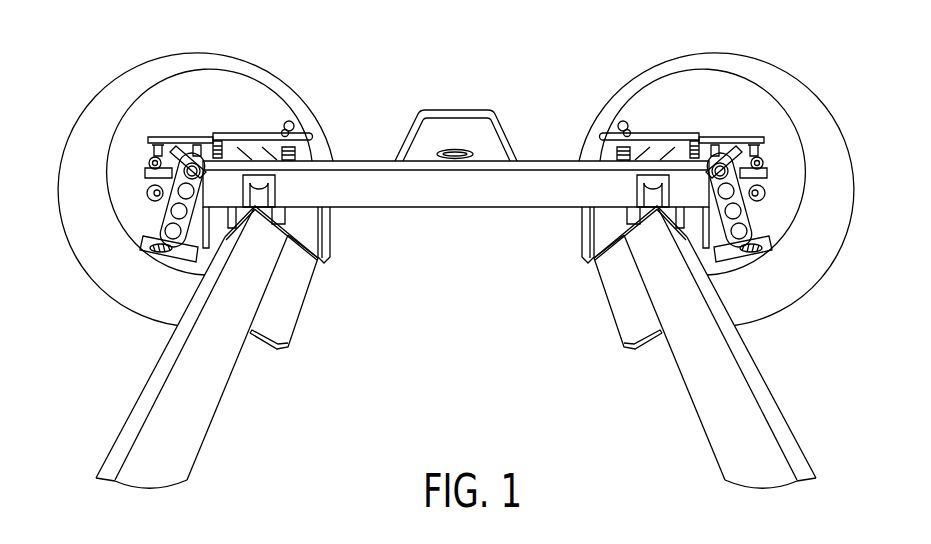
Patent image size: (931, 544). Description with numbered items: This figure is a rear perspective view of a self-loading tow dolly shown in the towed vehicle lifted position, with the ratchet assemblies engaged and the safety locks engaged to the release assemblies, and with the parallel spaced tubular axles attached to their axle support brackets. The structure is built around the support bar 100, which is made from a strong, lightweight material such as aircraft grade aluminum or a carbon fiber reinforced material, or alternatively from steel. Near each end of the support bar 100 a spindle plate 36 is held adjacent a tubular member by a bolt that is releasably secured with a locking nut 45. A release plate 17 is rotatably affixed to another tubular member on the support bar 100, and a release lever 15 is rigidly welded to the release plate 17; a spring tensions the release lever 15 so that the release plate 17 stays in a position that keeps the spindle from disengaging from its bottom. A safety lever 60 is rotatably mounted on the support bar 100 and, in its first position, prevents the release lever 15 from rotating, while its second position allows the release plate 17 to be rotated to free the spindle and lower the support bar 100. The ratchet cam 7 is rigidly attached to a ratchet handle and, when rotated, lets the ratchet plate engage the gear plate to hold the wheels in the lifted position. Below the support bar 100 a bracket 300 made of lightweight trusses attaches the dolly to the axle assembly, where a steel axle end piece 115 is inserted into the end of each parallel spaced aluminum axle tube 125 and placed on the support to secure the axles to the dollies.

The support bar 100 is at (468, 199).
The axle end piece 115 is at (268, 195).
The parallel spaced aluminum axle tube 125 is at (230, 367).
The release lever 15 is at (312, 137).
The release plate 17 is at (153, 140).
The spindle plate 36 is at (162, 215).
The locking nut 45 is at (297, 302).
The safety lever 60 is at (283, 125).
The ratchet cam 7 is at (148, 193).
The bracket 300 is at (340, 255).